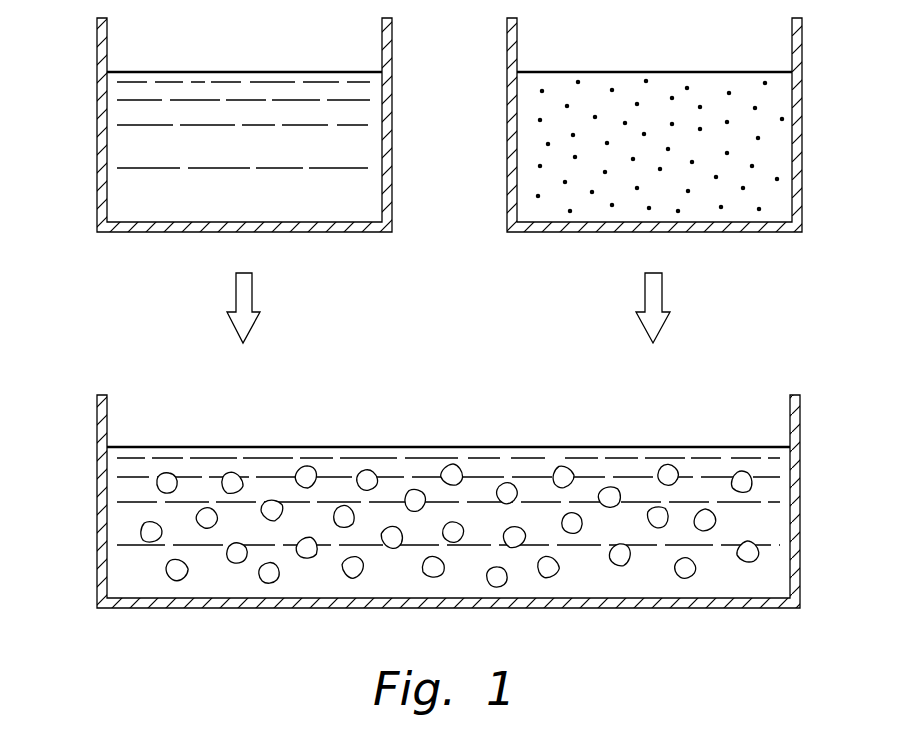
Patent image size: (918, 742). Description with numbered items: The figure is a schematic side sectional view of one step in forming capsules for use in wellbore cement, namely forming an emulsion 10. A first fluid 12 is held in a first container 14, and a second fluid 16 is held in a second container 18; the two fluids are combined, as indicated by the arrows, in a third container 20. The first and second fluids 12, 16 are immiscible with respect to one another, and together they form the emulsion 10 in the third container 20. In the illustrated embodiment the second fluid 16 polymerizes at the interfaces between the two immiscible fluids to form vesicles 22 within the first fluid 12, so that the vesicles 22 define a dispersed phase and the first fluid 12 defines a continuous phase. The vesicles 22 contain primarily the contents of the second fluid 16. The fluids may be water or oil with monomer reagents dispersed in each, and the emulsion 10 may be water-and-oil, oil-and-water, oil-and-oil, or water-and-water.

The emulsion 10 is at (431, 382).
The first fluid 12 is at (244, 75).
The first container 14 is at (97, 45).
The second fluid 16 is at (653, 75).
The second container 18 is at (802, 44).
The third container 20 is at (800, 420).
The vesicles 22 is at (506, 462).